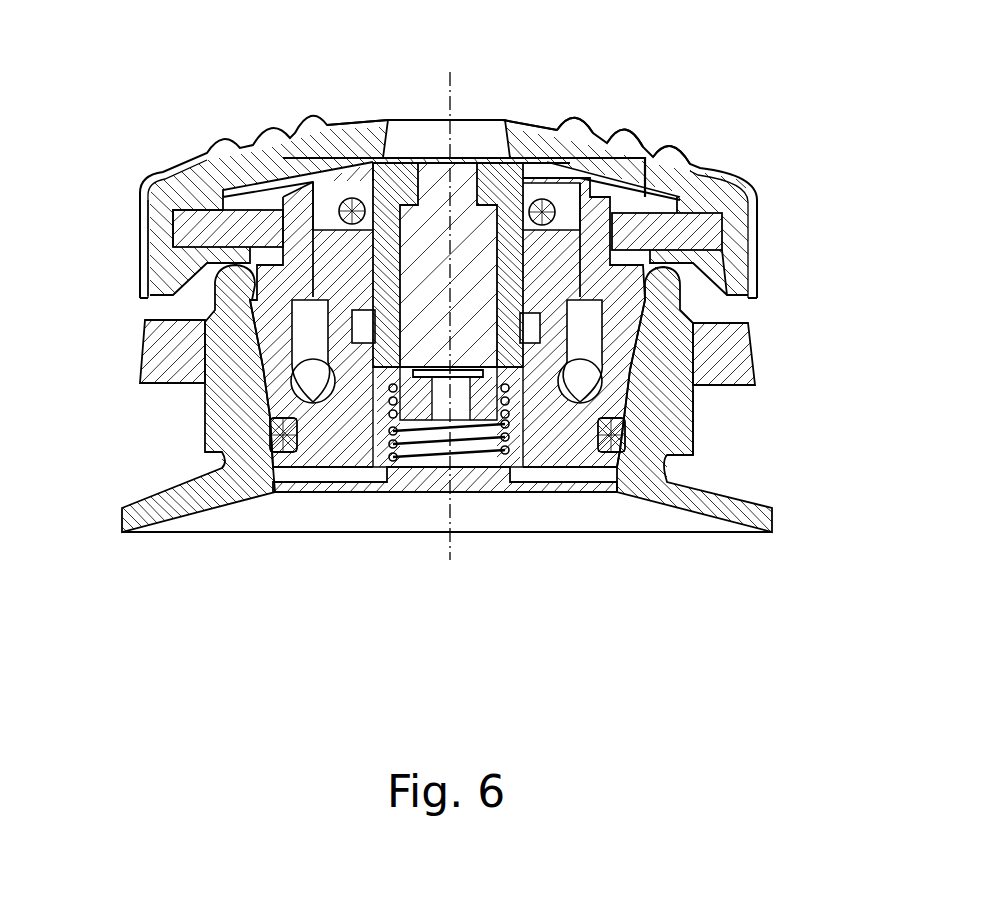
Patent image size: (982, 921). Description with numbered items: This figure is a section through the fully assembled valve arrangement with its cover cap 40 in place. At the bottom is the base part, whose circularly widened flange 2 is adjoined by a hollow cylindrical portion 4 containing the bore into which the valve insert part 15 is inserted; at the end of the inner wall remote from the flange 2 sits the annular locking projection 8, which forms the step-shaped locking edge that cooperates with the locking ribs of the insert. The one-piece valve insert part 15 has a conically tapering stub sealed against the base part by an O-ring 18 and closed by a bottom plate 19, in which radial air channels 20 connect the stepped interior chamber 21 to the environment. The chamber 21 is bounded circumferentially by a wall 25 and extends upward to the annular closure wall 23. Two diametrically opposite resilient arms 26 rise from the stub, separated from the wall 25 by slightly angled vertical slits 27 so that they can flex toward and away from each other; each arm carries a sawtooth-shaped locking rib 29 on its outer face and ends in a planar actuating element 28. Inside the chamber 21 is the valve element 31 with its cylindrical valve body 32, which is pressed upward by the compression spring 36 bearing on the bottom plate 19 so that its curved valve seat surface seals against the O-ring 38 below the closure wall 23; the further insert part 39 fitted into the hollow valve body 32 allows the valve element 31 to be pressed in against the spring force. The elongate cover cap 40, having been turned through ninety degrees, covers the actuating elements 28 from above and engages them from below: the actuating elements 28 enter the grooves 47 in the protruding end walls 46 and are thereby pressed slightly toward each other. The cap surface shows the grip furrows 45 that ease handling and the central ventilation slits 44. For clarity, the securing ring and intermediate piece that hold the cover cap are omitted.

The flange 2 is at (186, 517).
The hollow cylindrical portion 4 is at (697, 420).
The annular locking projection 8 is at (150, 337).
The valve insert part 15 is at (215, 462).
The O-ring 18 is at (672, 470).
The bottom plate 19 is at (313, 495).
The air channels 20 is at (583, 470).
The chamber 21 is at (468, 470).
The annular closure wall 23 is at (628, 190).
The wall 25 is at (230, 290).
The resilient arms 26 is at (722, 388).
The vertical slit 27 is at (735, 358).
The actuating elements 28 is at (205, 175).
The locking rib 29 is at (268, 412).
The valve element 31 is at (466, 118).
The valve body 32 is at (358, 178).
The compression spring 36 is at (405, 458).
The O-ring 38 is at (340, 200).
The insert part 39 is at (438, 162).
The cover cap 40 is at (762, 244).
The ventilation slits 44 is at (490, 122).
The grip furrows 45 is at (593, 120).
The end walls 46 is at (146, 262).
The groove 47 is at (178, 222).